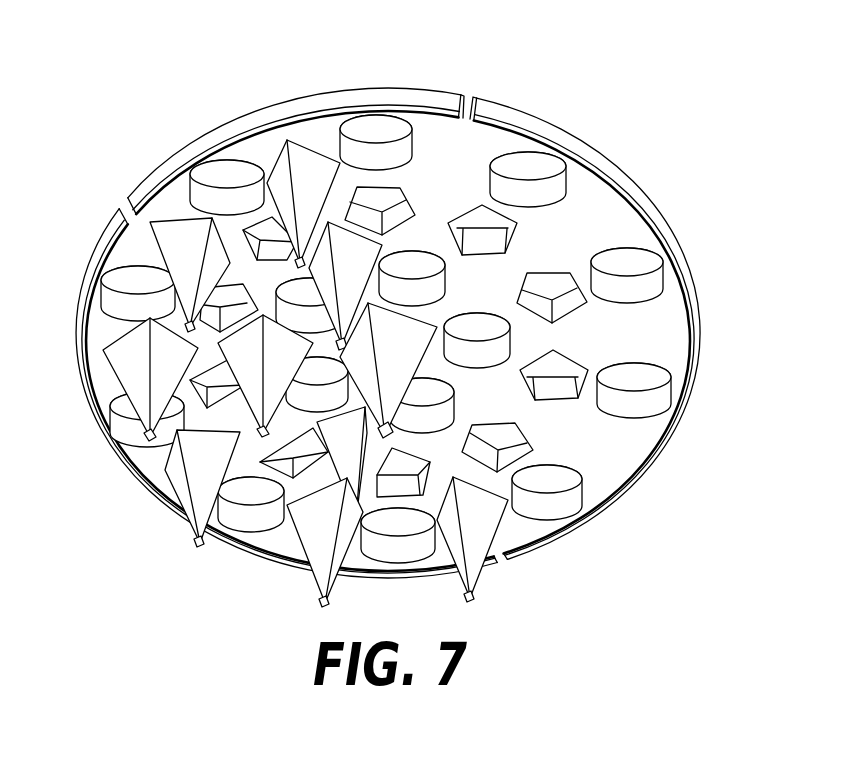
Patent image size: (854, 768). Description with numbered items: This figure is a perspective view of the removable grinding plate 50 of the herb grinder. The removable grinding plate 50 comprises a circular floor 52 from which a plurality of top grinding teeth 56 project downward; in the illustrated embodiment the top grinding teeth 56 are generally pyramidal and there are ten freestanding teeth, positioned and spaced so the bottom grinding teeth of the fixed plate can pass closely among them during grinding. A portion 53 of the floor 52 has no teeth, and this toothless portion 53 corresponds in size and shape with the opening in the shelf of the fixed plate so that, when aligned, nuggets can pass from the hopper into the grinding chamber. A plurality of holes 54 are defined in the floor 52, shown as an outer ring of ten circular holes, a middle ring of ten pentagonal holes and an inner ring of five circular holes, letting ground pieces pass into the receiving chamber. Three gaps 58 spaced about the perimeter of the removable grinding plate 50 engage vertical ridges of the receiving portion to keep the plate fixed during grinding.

The removable grinding plate 50 is at (398, 324).
The circular floor 52 is at (133, 243).
The toothless portion 53 is at (672, 335).
The holes 54 is at (660, 386).
The top grinding teeth 56 is at (478, 565).
The gaps 58 is at (469, 100).